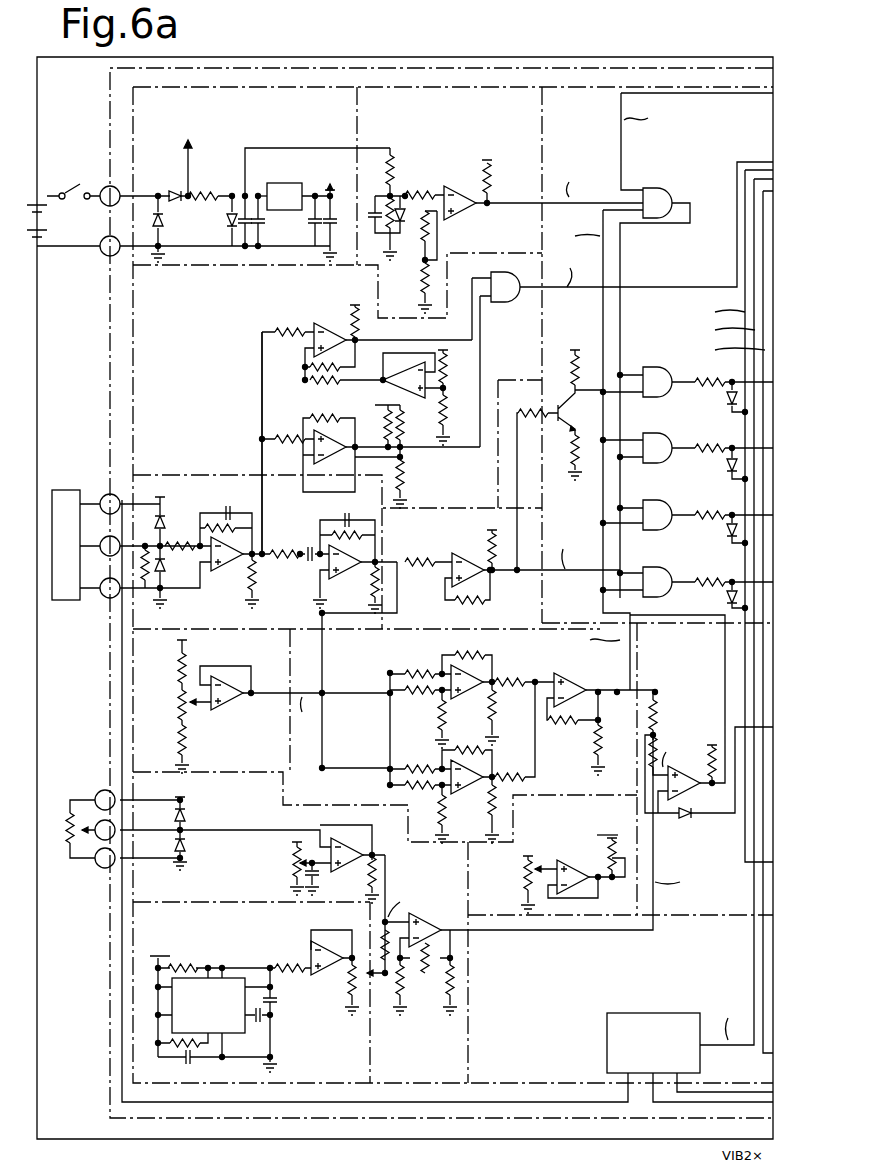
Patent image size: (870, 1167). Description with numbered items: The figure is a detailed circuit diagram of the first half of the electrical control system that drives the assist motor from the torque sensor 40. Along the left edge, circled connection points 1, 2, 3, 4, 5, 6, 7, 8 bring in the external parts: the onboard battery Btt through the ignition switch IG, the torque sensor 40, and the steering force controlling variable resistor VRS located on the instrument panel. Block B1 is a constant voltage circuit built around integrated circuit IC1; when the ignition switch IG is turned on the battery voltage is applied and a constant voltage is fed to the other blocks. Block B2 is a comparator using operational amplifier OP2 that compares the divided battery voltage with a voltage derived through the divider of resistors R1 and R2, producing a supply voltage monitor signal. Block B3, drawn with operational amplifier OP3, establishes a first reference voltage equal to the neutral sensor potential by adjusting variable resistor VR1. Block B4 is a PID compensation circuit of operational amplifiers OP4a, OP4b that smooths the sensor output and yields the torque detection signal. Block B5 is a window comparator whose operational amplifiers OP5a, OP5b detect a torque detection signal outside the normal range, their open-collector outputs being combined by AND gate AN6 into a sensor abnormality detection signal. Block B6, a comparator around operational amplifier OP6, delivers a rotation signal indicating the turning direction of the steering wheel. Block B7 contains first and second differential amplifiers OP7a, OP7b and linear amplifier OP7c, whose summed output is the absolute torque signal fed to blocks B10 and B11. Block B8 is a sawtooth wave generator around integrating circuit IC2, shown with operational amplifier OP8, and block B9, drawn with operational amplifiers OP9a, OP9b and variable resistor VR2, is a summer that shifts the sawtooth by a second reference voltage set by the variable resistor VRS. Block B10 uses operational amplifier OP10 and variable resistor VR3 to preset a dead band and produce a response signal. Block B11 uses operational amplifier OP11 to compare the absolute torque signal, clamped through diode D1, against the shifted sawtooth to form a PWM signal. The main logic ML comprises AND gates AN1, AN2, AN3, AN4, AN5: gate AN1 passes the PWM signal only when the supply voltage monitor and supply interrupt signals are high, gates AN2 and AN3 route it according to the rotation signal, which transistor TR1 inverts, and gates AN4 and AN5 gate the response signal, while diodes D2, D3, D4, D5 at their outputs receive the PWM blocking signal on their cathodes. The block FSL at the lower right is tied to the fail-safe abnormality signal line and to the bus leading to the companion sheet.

The ignition switch IG is at (70, 180).
The onboard battery Btt is at (49, 233).
The steering wheel 1 is at (110, 196).
The terminal 2 is at (110, 246).
The terminal 3 is at (110, 504).
The terminal 4 is at (110, 546).
The terminal 5 is at (110, 588).
The trigger input terminal 6 is at (105, 800).
The rod 7 is at (105, 830).
The motor 8 is at (105, 858).
The torque sensor 40 is at (78, 556).
The constant voltage circuit B1 is at (331, 206).
The supply voltage comparator B2 is at (500, 200).
The first reference voltage circuit B3 is at (263, 702).
The PID compensation circuit B4 is at (331, 551).
The window comparator B5 is at (308, 416).
The rotation comparator B6 is at (506, 558).
The absolute torque signal block B7 is at (473, 737).
The sawtooth wave generator B8 is at (248, 987).
The summer B9 is at (228, 851).
The dead band comparator B10 is at (548, 869).
The PWM comparator B11 is at (701, 727).
The main logic circuit ML is at (635, 570).
The fail-safe logic FSL is at (724, 940).
The integrated circuit IC1 is at (280, 187).
The integrating circuit IC2 is at (208, 1006).
The resistor R1 is at (413, 232).
The resistor R2 is at (412, 288).
The operational amplifier OP2 is at (470, 216).
The operational amplifier OP3 is at (235, 712).
The operational amplifier OP4a is at (220, 574).
The operational amplifier OP4b is at (343, 578).
The operational amplifier OP5a is at (312, 330).
The operational amplifier OP5b is at (327, 460).
The operational amplifier OP6 is at (455, 560).
The operational amplifier OP7a is at (472, 693).
The operational amplifier OP7b is at (472, 791).
The operational amplifier OP7c is at (560, 674).
The operational amplifier OP8 is at (325, 978).
The operational amplifier OP9a is at (345, 872).
The operational amplifier OP9b is at (434, 908).
The operational amplifier OP10 is at (588, 888).
The operational amplifier OP11 is at (687, 772).
The AND gate AN1 is at (658, 185).
The AND gate AN2 is at (650, 372).
The AND gate AN3 is at (650, 439).
The AND gate AN4 is at (650, 506).
The AND gate AN5 is at (650, 572).
The AND gate AN6 is at (508, 303).
The transistor TR1 is at (560, 452).
The diode D1 is at (685, 823).
The diode D2 is at (724, 398).
The diode D3 is at (724, 464).
The diode D4 is at (724, 530).
The diode D5 is at (724, 597).
The variable resistor VR1 is at (164, 705).
The variable resistor VR2 is at (272, 862).
The variable resistor VR3 is at (510, 880).
The steering force controlling variable resistor VRS is at (71, 846).